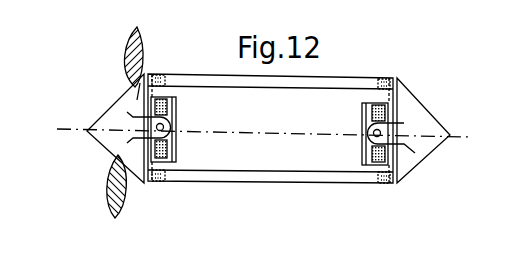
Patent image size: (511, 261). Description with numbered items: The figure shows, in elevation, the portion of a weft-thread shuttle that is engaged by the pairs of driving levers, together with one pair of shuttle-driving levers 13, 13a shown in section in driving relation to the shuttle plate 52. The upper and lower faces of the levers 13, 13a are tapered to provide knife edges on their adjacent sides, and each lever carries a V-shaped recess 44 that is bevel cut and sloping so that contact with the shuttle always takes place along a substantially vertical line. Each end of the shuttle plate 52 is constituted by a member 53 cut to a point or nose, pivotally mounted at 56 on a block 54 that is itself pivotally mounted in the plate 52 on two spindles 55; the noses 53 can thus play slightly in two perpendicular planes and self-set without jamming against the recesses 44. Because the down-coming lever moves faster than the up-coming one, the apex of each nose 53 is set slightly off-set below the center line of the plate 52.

The shuttle-driving lever 13 is at (108, 187).
The shuttle-driving lever 13a is at (124, 56).
The V-shaped recess 44 is at (139, 23).
The shuttle plate 52 is at (263, 128).
The shuttle-plate end 53 is at (268, 128).
The hub block 54 is at (173, 116).
The spindle 55 is at (163, 83).
The pivot 56 is at (172, 133).